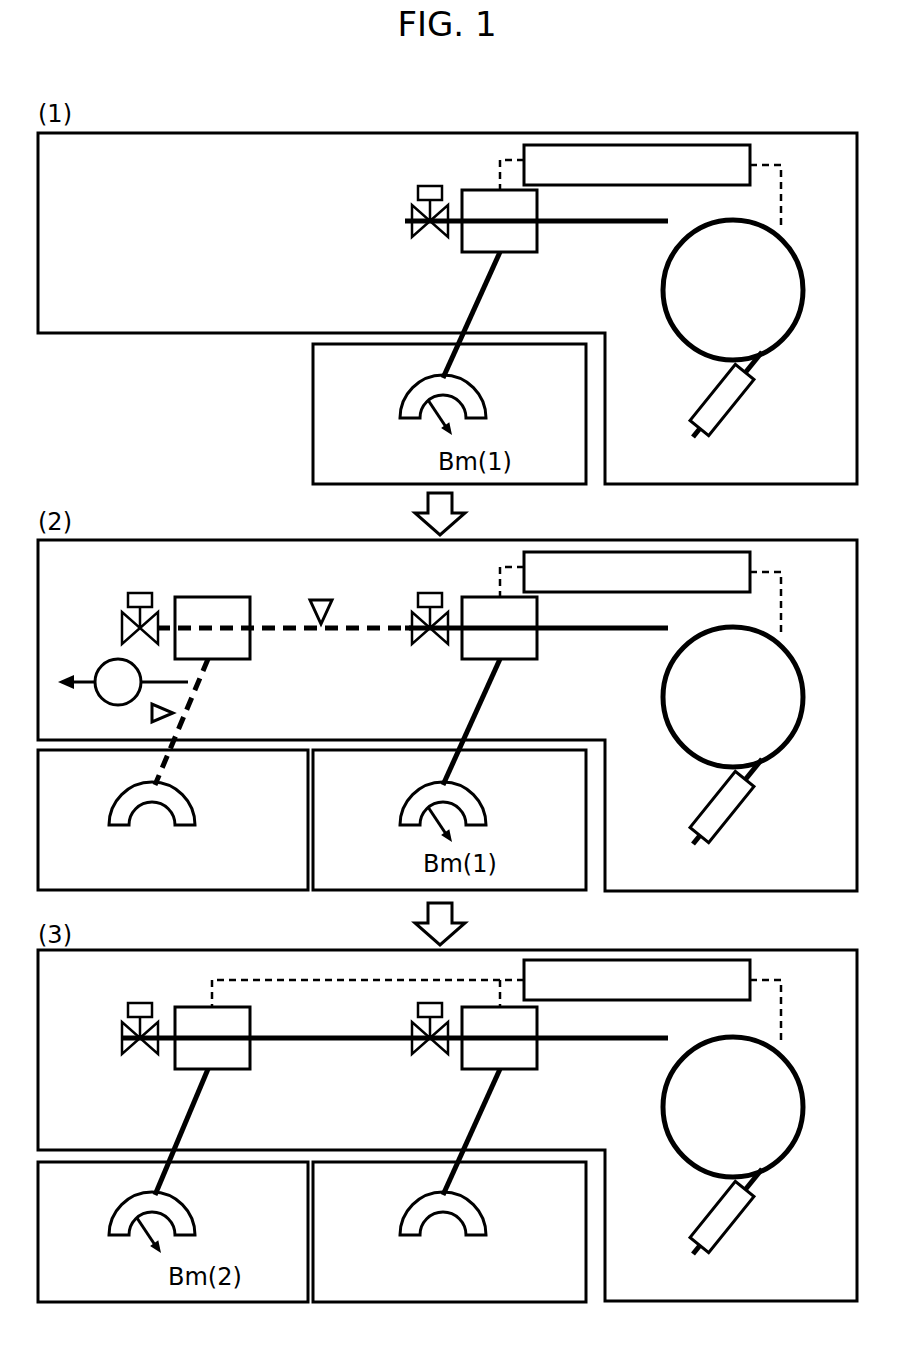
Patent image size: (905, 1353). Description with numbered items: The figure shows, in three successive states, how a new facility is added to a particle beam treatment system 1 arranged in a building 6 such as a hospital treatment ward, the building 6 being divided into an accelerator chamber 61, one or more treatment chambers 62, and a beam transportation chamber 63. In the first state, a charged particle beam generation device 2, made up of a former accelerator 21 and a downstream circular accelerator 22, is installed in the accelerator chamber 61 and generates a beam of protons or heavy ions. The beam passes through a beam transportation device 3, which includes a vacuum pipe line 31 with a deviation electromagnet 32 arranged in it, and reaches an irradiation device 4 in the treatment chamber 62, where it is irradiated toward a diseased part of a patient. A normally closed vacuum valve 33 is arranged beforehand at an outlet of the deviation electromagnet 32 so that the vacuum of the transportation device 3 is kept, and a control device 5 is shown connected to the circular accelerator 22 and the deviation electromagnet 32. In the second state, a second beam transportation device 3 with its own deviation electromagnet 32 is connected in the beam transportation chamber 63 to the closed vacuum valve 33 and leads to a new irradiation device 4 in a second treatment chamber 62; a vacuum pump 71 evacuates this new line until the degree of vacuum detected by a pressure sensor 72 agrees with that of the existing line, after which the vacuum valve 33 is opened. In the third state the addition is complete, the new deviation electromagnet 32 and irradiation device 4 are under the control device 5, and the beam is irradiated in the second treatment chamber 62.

The particle beam treatment system 1 is at (370, 226).
The charged particle beam generation device 2 is at (670, 340).
The former accelerator 21 is at (690, 438).
The circular accelerator 22 is at (791, 250).
The beam transportation device 3 is at (630, 227).
The vacuum pipe line 31 is at (612, 231).
The deviation electromagnet 32 is at (520, 256).
The vacuum valve 33 is at (430, 241).
The irradiation device 4 is at (487, 410).
The control device 5 is at (751, 153).
The building 6 is at (268, 133).
The accelerator chamber 61 is at (818, 867).
The treatment chamber 62 is at (312, 823).
The beam transportation chamber 63 is at (447, 717).
The vacuum pump 71 is at (100, 666).
The pressure sensor 72 is at (150, 716).